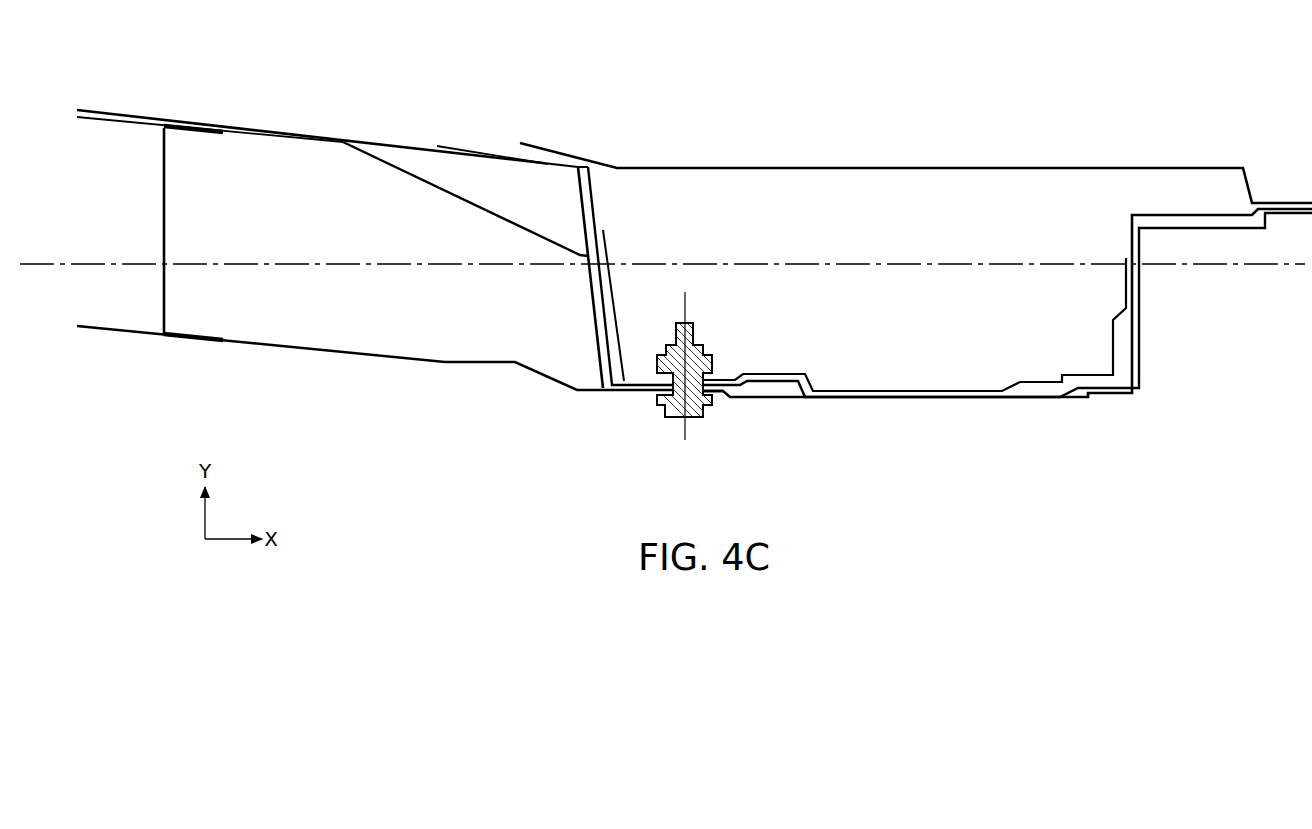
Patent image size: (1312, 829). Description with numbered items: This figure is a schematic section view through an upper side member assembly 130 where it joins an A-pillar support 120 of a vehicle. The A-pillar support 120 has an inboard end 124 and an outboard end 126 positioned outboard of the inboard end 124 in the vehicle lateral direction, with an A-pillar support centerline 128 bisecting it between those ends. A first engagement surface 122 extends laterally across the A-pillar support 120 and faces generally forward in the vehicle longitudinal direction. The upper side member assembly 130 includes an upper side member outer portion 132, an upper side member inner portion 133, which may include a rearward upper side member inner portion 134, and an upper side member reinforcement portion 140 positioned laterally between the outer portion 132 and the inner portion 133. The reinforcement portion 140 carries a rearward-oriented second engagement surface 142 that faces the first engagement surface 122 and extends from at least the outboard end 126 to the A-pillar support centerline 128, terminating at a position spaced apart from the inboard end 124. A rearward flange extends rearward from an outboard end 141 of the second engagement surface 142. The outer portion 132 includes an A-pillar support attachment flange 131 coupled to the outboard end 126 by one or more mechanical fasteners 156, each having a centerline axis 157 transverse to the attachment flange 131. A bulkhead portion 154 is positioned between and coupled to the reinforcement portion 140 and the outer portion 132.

The A-pillar support 120 is at (1007, 227).
The first engagement surface 122 is at (583, 210).
The inboard end 124 is at (916, 118).
The outboard end 126 is at (939, 354).
The A-pillar support centerline 128 is at (1258, 266).
The upper side member assembly 130 is at (327, 91).
The A-pillar support attachment flange 131 is at (723, 397).
The upper side member outer portion 132 is at (262, 345).
The upper side member inner portion 133 is at (235, 85).
The rearward upper side member inner portion 134 is at (479, 106).
The upper side member reinforcement portion 140 is at (460, 200).
The outboard end 141 is at (570, 350).
The second engagement surface 142 is at (590, 322).
The bulkhead portion 154 is at (164, 210).
The mechanical fastener 156 is at (670, 418).
The centerline axis 157 is at (688, 438).